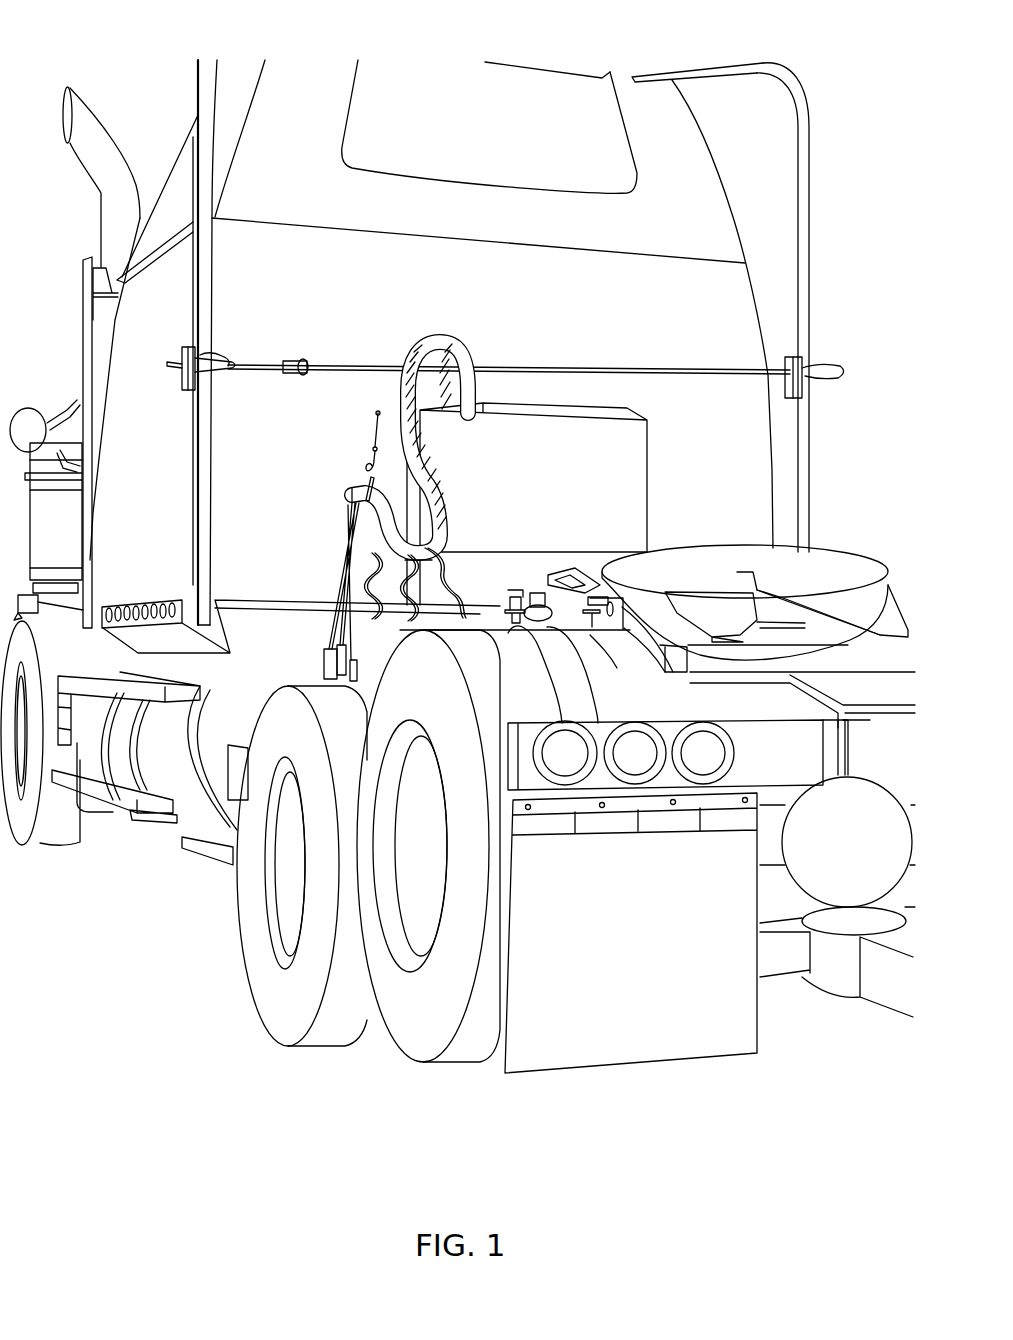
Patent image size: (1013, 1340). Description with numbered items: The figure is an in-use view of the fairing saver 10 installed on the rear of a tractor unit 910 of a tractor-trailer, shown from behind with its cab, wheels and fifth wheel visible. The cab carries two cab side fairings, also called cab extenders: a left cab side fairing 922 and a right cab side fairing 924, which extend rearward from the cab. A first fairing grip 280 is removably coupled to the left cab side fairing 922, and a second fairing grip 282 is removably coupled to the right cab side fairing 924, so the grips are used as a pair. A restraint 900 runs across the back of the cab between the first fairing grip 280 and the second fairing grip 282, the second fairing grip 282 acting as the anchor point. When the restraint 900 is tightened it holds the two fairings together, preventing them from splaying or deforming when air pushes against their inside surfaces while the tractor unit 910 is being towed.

The fairing saver 10 is at (110, 167).
The first fairing grip 280 is at (178, 346).
The second fairing grip 282 is at (810, 362).
The restraint 900 is at (657, 368).
The tractor unit 910 is at (167, 820).
The left cab side fairing 922 is at (206, 458).
The right cab side fairing 924 is at (777, 180).